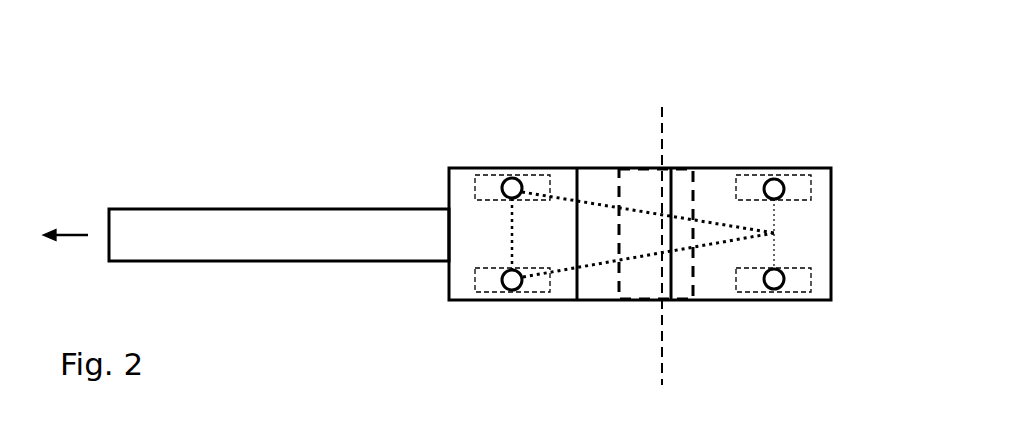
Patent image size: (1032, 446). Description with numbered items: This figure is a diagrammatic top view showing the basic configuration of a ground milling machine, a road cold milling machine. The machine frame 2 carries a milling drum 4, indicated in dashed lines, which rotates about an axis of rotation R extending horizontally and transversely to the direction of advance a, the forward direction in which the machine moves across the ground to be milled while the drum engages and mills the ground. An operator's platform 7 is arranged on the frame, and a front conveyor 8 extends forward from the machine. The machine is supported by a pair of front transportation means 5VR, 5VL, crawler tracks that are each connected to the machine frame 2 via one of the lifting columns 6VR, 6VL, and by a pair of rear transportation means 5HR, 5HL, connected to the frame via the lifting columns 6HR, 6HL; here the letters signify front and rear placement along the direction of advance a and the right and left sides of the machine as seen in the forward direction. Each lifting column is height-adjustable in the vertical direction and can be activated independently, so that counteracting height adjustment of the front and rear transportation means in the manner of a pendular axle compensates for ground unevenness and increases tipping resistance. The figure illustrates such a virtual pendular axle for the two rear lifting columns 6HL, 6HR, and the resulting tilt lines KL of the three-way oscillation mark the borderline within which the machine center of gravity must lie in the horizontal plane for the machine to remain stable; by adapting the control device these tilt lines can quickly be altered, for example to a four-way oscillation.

The machine frame 2 is at (798, 173).
The milling drum 4 is at (687, 178).
The front right transportation means 5VR is at (487, 193).
The front left transportation means 5VL is at (487, 278).
The rear right transportation means 5HR is at (807, 187).
The rear left transportation means 5HL is at (798, 280).
The front right lifting column 6VR is at (509, 178).
The front left lifting column 6VL is at (511, 290).
The rear right lifting column 6HR is at (777, 179).
The rear left lifting column 6HL is at (776, 284).
The operator's platform 7 is at (585, 178).
The front conveyor 8 is at (275, 222).
The tilt lines KL is at (609, 268).
The axis of rotation R is at (658, 259).
The direction of advance a is at (65, 246).